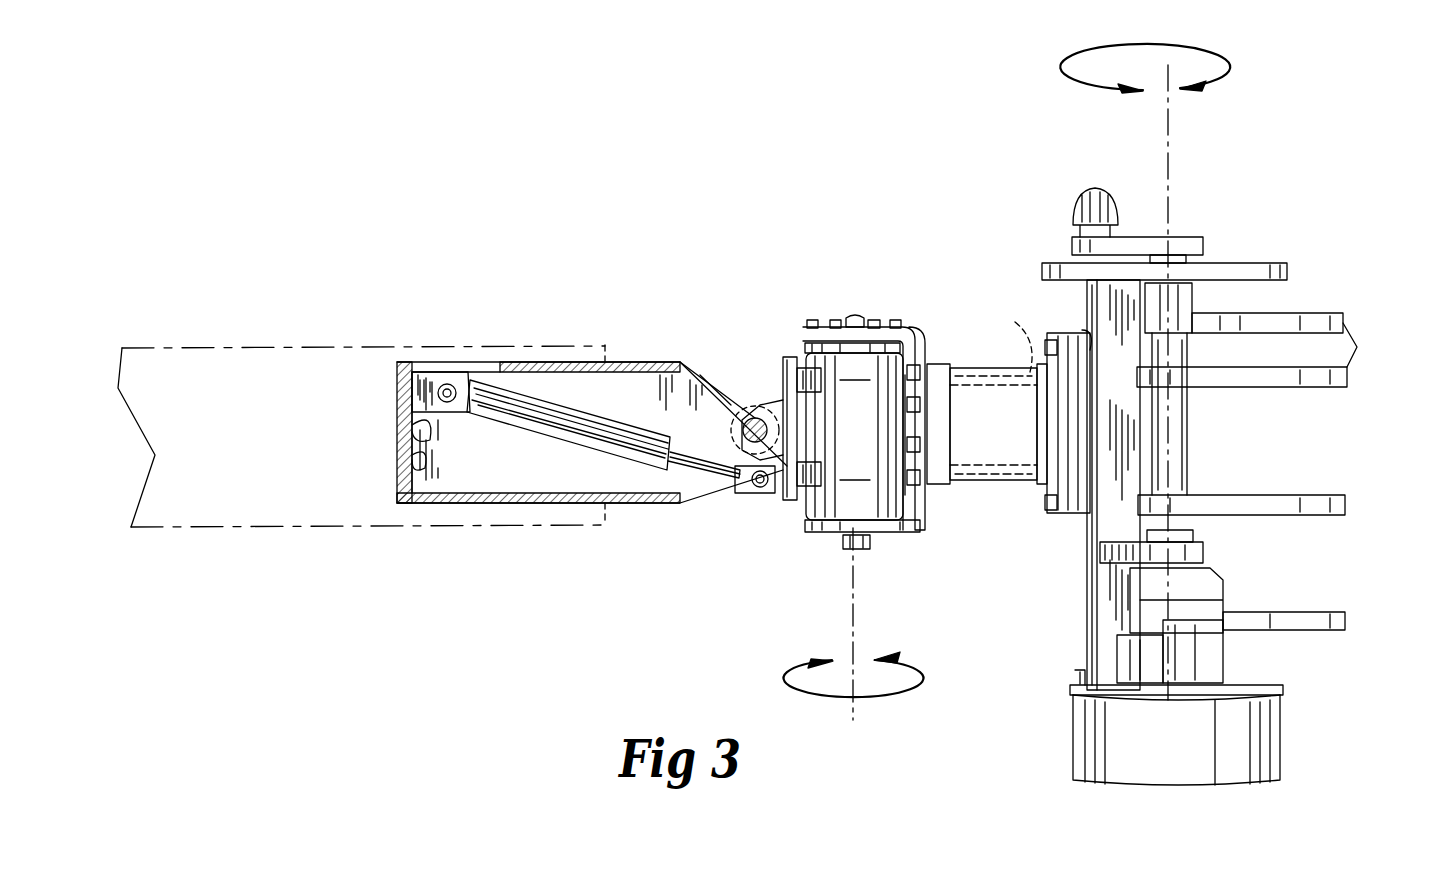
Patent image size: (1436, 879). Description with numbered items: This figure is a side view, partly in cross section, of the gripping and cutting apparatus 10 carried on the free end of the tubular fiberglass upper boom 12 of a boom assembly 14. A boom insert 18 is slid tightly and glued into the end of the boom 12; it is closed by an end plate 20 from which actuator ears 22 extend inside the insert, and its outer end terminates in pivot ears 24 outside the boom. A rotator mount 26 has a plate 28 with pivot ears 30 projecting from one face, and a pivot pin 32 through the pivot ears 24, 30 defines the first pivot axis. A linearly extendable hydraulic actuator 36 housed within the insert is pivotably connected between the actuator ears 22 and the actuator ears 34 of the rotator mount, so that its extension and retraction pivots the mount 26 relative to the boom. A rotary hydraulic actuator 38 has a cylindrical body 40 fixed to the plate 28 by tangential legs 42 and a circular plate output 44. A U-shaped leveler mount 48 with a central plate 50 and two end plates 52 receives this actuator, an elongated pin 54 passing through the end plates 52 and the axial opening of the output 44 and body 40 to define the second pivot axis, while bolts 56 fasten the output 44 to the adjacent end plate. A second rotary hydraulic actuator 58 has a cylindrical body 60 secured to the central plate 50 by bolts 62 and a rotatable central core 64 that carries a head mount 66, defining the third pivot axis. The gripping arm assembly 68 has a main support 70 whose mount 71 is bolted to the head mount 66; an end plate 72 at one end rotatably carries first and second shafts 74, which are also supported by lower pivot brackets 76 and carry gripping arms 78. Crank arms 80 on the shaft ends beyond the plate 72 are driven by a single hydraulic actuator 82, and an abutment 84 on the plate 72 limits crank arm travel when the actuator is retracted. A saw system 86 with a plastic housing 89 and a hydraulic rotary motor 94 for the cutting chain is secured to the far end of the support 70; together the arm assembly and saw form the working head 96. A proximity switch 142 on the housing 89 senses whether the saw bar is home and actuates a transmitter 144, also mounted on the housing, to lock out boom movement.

The gripping and cutting apparatus 10 is at (769, 207).
The upper boom 12 is at (250, 527).
The boom assembly 14 is at (318, 344).
The boom insert 18 is at (632, 503).
The end plate 20 is at (412, 460).
The actuator ears 22 is at (410, 425).
The pivot ears 24 is at (735, 400).
The rotator mount 26 is at (778, 345).
The plate 28 is at (780, 520).
The pivot ears 30 is at (775, 390).
The pivot pin 32 is at (741, 432).
The actuator ears 34 is at (760, 500).
The hydraulic actuator 36 is at (530, 440).
The rotary hydraulic actuator 38 is at (826, 325).
The cylindrical body 40 is at (825, 510).
The tangential legs 42 is at (865, 420).
The circular plate output 44 is at (1008, 405).
The leveler mount 48 is at (922, 330).
The central plate 50 is at (932, 345).
The end plates 52 is at (800, 343).
The elongated pin 54 is at (850, 550).
The bolts 56 is at (890, 320).
The rotary hydraulic actuator 58 is at (940, 490).
The cylindrical body 60 is at (1027, 477).
The bolts 62 is at (908, 530).
The rotatable central core 64 is at (1013, 339).
The head mount 66 is at (1060, 515).
The gripping arm assembly 68 is at (1352, 267).
The main support 70 is at (1097, 595).
The mount 71 is at (1082, 330).
The end plate 72 is at (1280, 262).
The shafts 74 is at (1193, 535).
The lower pivot brackets 76 is at (1205, 555).
The gripping arms 78 is at (1360, 368).
The crank arm 80 is at (1195, 240).
The hydraulic actuator 82 is at (1073, 212).
The abutment 84 is at (1072, 248).
The saw system 86 is at (1072, 785).
The housing 89 is at (1283, 722).
The hydraulic rotary motor 94 is at (1225, 660).
The working head 96 is at (1275, 195).
The proximity switch 142 is at (1117, 645).
The transmitter 144 is at (1075, 672).